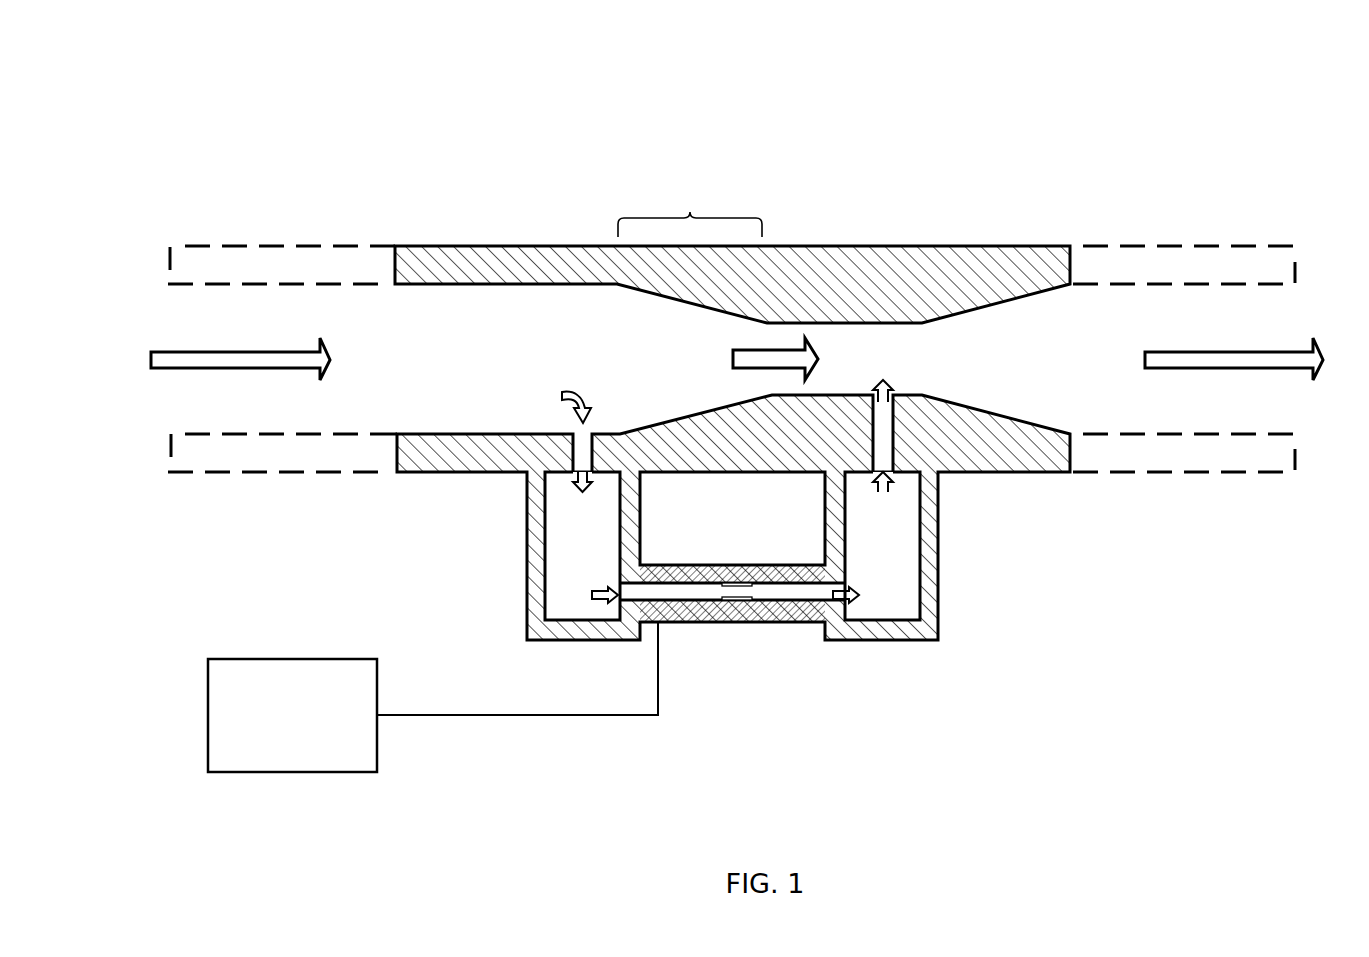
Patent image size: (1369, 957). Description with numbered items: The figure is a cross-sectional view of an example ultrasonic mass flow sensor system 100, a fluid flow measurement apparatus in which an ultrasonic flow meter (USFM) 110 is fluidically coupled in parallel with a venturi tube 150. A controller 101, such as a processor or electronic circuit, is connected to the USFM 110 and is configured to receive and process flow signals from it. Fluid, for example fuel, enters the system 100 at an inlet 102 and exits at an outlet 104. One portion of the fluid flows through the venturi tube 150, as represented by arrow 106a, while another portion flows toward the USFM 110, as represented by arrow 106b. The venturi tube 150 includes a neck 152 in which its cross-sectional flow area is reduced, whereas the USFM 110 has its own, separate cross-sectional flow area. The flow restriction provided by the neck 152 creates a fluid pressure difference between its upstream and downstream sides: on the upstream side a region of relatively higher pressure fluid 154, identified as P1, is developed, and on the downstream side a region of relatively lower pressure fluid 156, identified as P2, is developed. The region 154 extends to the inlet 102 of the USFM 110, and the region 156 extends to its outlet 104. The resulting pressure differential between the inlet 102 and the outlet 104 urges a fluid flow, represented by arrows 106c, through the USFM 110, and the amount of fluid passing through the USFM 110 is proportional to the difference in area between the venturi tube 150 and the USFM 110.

The ultrasonic mass flow sensor system 100 is at (352, 70).
The controller 101 is at (309, 746).
The inlet 102 is at (208, 323).
The outlet 104 is at (1275, 322).
The venturi tube 150 is at (445, 246).
The neck 152 is at (690, 211).
The region of relatively higher pressure fluid 154 is at (495, 338).
The region of relatively lower pressure fluid 156 is at (914, 350).
The arrow 106a is at (733, 357).
The arrow 106b is at (592, 404).
The arrows 106c is at (603, 604).
The ultrasonic flow meter 110 is at (732, 623).